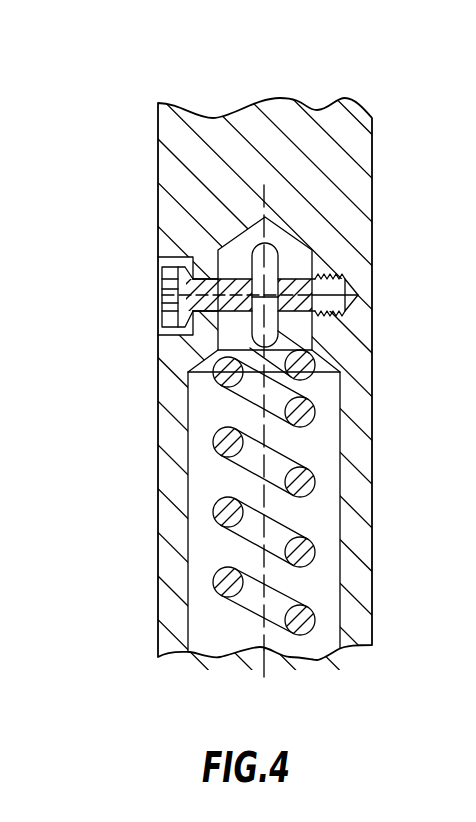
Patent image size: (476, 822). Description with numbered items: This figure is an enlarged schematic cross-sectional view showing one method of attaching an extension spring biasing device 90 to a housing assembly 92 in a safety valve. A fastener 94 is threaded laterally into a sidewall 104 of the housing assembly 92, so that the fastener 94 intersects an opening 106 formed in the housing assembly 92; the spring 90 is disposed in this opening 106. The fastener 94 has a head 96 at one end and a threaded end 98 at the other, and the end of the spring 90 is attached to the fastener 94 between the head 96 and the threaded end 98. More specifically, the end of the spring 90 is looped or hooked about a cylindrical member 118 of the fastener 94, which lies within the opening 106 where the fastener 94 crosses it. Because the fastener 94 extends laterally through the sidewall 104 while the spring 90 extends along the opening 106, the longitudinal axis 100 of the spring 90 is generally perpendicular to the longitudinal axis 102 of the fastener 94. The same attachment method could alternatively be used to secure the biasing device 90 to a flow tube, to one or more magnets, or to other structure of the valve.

The extension spring biasing device 90 is at (315, 488).
The housing assembly 92 is at (372, 207).
The fastener 94 is at (200, 318).
The head 96 is at (160, 267).
The threaded end 98 is at (328, 276).
The longitudinal axis 100 is at (262, 663).
The longitudinal axis 102 is at (162, 296).
The sidewall 104 is at (187, 183).
The opening 106 is at (188, 452).
The cylindrical member 118 is at (246, 278).